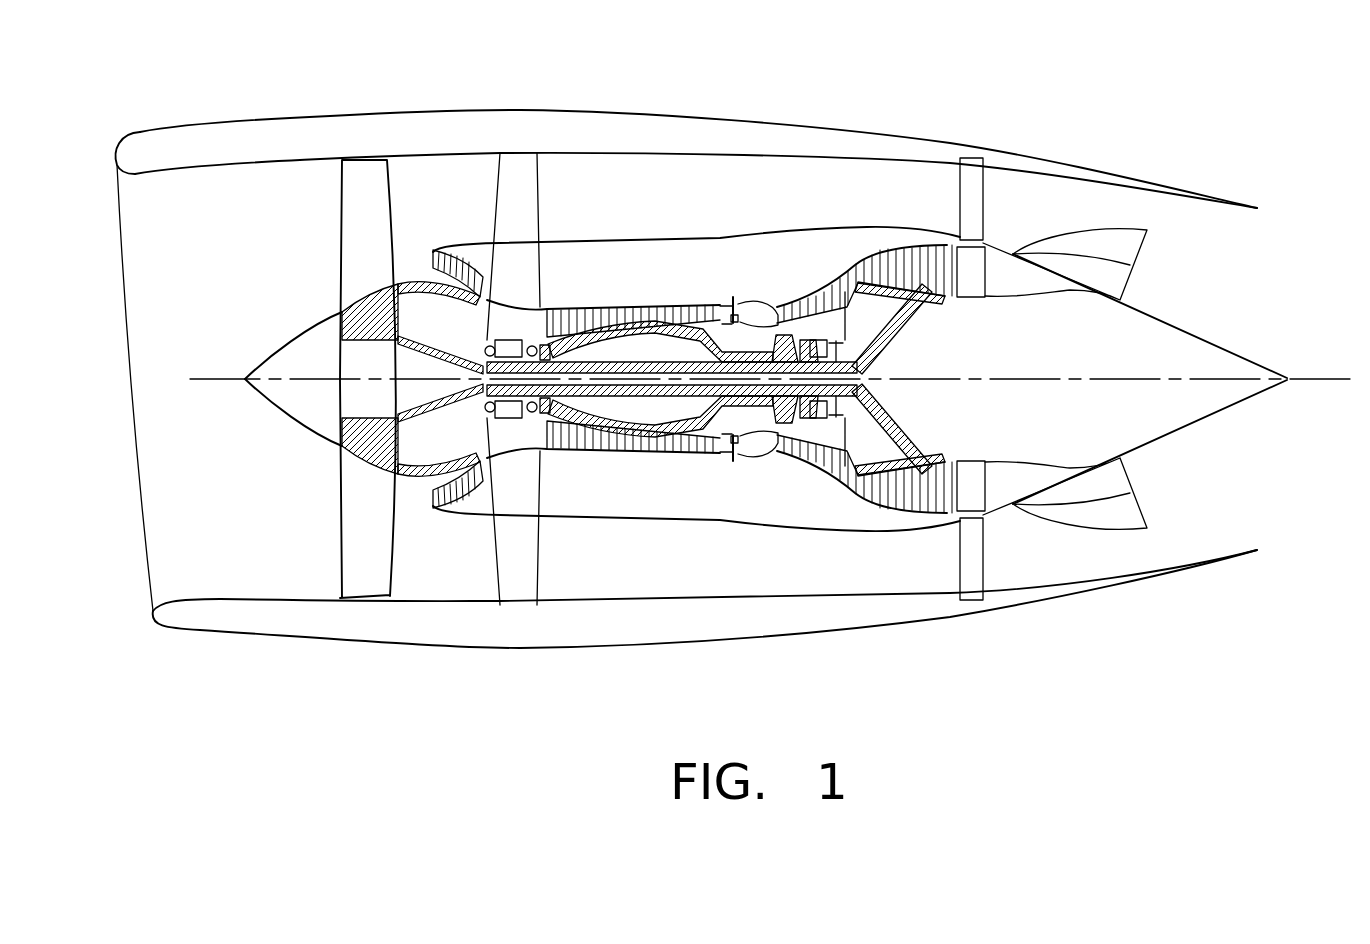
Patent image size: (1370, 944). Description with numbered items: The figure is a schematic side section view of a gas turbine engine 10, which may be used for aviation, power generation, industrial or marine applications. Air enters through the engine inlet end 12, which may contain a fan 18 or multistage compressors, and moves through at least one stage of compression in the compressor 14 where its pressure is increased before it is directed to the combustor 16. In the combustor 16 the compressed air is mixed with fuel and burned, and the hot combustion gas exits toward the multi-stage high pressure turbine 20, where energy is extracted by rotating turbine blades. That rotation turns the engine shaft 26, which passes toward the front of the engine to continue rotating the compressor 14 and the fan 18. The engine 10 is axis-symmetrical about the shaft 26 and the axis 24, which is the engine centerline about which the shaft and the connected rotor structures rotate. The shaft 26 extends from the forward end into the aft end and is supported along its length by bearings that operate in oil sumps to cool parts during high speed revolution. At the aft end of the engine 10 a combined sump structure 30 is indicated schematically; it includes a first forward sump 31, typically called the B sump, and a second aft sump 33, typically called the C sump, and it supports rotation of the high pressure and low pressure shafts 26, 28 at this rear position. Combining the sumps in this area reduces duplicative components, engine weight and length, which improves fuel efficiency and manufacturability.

The gas turbine engine 10 is at (1005, 90).
The engine inlet end 12 is at (196, 272).
The compressor 14 is at (585, 300).
The combustor 16 is at (755, 296).
The fan 18 is at (325, 248).
The multi-stage high pressure turbine 20 is at (806, 283).
The axis 24 is at (1348, 378).
The engine shaft 26 is at (728, 315).
The low pressure shaft 28 is at (628, 392).
The combined sump structure 30 is at (835, 447).
The first forward sump 31 is at (817, 420).
The second aft sump 33 is at (840, 408).